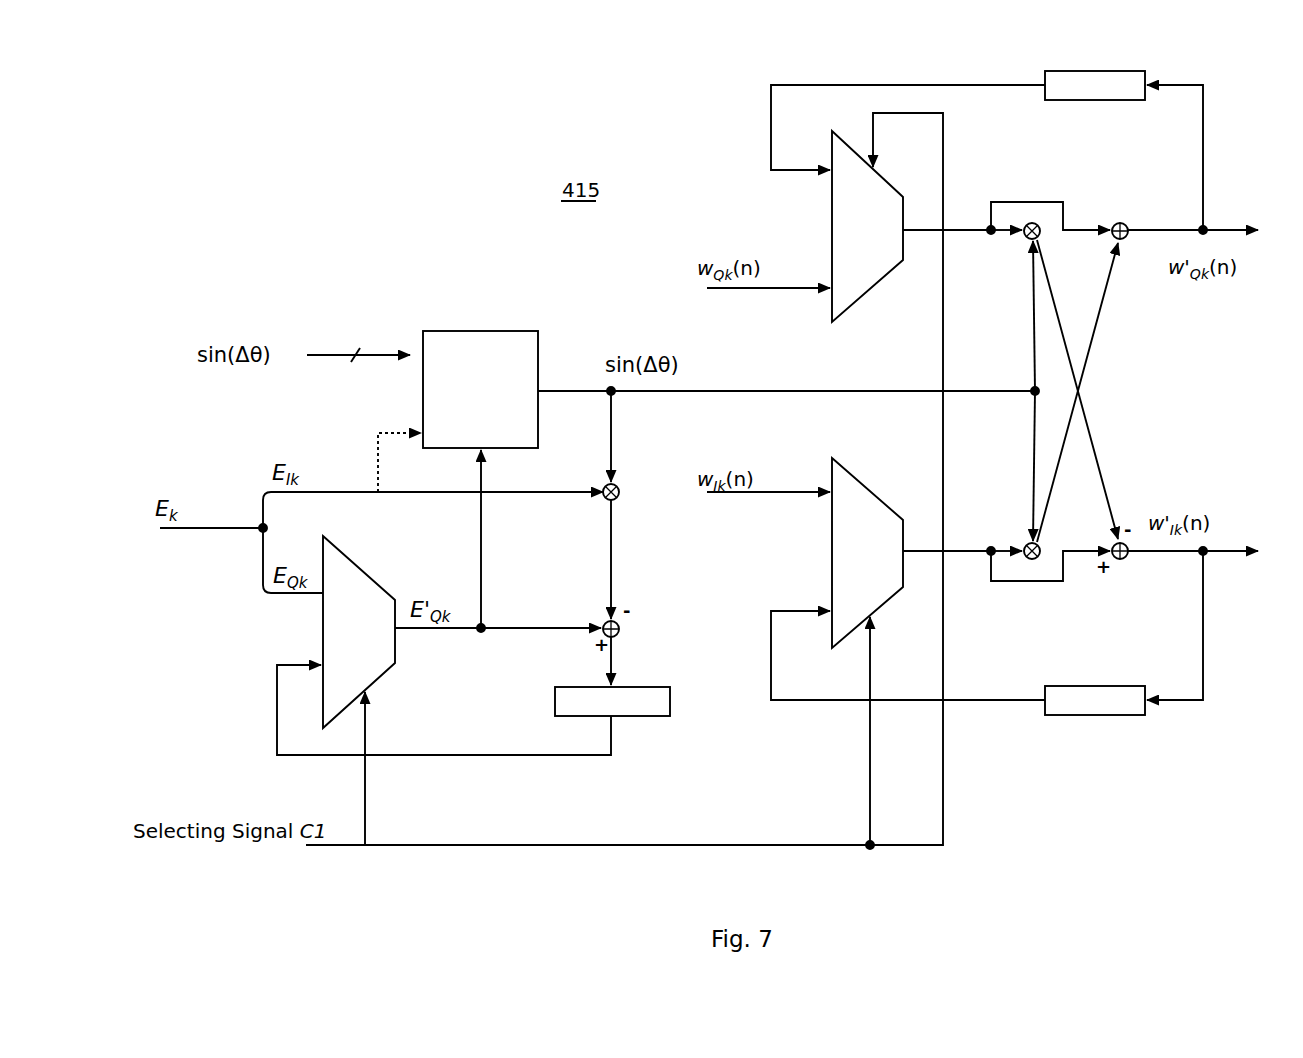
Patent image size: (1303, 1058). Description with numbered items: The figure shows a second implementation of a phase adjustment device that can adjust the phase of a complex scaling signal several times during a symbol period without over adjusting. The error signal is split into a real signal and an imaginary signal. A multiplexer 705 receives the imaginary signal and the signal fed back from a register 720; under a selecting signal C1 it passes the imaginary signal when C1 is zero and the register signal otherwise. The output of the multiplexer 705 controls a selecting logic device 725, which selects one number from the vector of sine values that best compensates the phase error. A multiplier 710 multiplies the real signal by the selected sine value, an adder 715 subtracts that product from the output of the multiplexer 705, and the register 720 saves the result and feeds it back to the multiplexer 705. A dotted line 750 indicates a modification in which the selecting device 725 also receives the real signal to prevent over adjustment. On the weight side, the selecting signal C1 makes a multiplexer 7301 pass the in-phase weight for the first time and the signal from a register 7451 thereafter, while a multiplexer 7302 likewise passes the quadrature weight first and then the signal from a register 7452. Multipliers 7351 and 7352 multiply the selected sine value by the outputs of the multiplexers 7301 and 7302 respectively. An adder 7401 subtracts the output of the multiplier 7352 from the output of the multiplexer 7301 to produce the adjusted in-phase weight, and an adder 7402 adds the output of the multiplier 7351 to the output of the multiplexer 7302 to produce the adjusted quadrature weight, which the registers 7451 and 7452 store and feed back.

The multiplexer 705 is at (368, 575).
The multiplier 710 is at (603, 500).
The adder 715 is at (603, 622).
The register 720 is at (562, 688).
The selecting logic device 725 is at (480, 331).
The dot line 750 is at (376, 433).
The multiplexer 7301 is at (893, 473).
The multiplexer 7302 is at (880, 311).
The multiplier 7351 is at (1024, 543).
The multiplier 7352 is at (1024, 243).
The adder 7401 is at (1145, 575).
The adder 7402 is at (1150, 208).
The register 7451 is at (1073, 685).
The register 7452 is at (1086, 101).